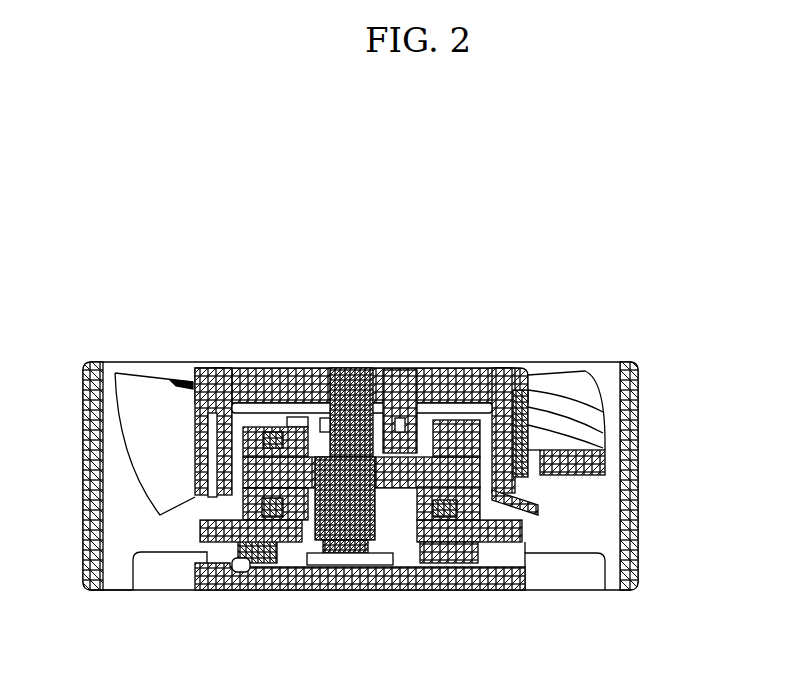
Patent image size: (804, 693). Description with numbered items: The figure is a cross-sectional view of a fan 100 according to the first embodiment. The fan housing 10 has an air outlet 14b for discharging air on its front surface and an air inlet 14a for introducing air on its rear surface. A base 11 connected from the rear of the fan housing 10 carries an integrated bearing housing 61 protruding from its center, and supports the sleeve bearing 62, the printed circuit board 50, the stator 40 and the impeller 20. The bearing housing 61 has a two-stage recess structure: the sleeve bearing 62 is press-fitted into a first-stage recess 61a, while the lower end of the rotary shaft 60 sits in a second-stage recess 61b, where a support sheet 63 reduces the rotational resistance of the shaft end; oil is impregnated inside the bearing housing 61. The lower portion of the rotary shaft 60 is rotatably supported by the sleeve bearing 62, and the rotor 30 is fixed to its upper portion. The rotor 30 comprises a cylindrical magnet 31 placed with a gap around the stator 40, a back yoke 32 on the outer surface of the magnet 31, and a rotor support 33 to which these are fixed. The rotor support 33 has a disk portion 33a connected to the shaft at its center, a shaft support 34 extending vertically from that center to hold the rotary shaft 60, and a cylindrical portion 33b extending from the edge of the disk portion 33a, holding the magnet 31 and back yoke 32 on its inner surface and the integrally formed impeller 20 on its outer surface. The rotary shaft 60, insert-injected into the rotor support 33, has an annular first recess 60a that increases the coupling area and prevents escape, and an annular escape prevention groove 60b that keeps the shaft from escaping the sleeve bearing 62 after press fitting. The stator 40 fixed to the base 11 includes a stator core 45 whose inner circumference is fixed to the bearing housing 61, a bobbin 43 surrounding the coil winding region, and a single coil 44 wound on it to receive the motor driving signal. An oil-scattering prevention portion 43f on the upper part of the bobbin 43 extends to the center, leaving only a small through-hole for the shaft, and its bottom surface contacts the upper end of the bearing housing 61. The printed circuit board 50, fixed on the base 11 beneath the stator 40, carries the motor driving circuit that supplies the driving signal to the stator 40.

The fan 100 is at (706, 258).
The fan housing 10 is at (637, 548).
The base 11 is at (518, 577).
The air inlet 14a is at (100, 590).
The air outlet 14b is at (115, 373).
The impeller 20 is at (577, 472).
The rotor 30 is at (694, 398).
The magnet 31 is at (605, 437).
The back yoke 32 is at (605, 460).
The rotor support 33 is at (245, 281).
The disk portion 33a is at (255, 403).
The cylindrical portion 33b is at (194, 447).
The shaft support 34 is at (395, 418).
The stator 40 is at (512, 648).
The bobbin 43 is at (458, 520).
The oil-scattering prevention portion 43f is at (447, 407).
The coil 44 is at (440, 542).
The stator core 45 is at (483, 550).
The printed circuit board 50 is at (527, 542).
The rotary shaft 60 is at (355, 378).
The first recess 60a is at (377, 378).
The escape prevention groove 60b is at (342, 378).
The bearing housing 61 is at (305, 510).
The first-stage recess 61a is at (330, 567).
The second-stage recess 61b is at (366, 556).
The sleeve bearing 62 is at (325, 530).
The support sheet 63 is at (390, 565).